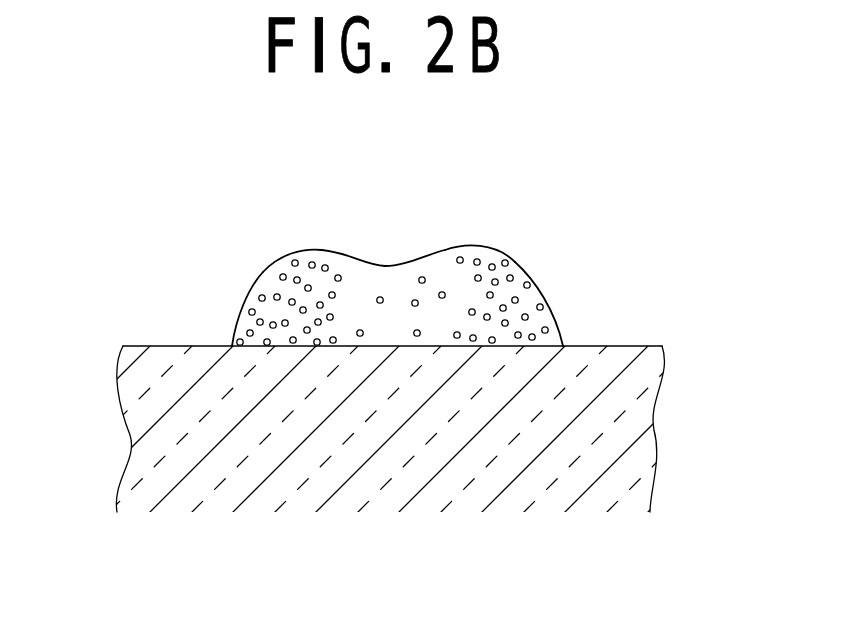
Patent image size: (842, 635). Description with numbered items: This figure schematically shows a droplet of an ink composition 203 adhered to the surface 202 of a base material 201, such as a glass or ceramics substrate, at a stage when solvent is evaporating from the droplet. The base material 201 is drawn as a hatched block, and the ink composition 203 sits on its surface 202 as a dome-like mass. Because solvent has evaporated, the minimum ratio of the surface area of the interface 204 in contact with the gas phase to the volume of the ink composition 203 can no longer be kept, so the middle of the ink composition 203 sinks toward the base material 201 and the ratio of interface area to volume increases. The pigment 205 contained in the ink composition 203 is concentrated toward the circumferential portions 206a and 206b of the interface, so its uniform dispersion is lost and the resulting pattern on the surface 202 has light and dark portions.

The base material 201 is at (615, 355).
The surface 202 is at (157, 346).
The ink composition 203 is at (496, 250).
The interface 204 is at (444, 256).
The pigment 205 is at (316, 262).
The portion of the interface 206a is at (241, 307).
The portion of the interface 206b is at (550, 297).